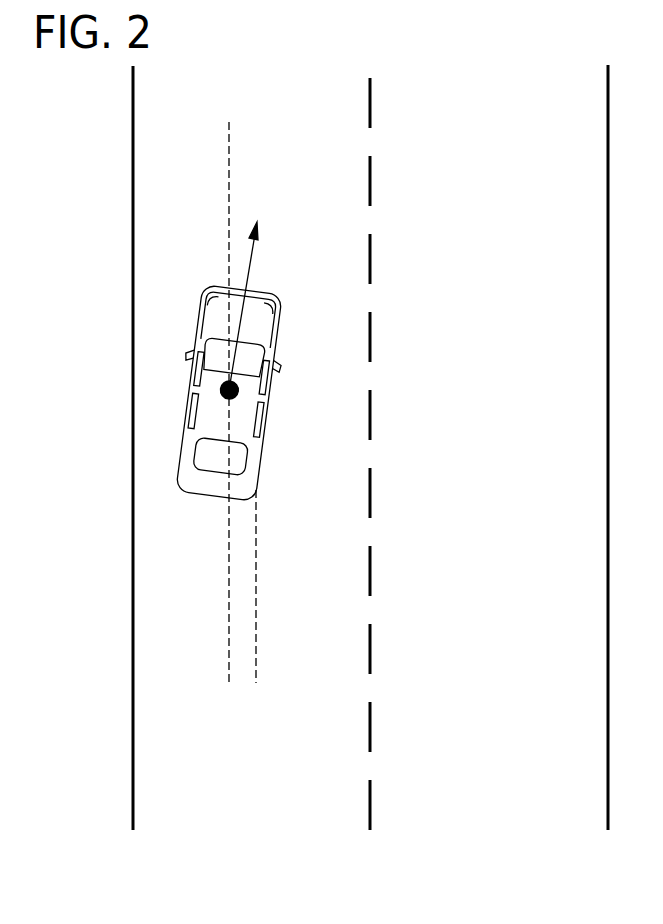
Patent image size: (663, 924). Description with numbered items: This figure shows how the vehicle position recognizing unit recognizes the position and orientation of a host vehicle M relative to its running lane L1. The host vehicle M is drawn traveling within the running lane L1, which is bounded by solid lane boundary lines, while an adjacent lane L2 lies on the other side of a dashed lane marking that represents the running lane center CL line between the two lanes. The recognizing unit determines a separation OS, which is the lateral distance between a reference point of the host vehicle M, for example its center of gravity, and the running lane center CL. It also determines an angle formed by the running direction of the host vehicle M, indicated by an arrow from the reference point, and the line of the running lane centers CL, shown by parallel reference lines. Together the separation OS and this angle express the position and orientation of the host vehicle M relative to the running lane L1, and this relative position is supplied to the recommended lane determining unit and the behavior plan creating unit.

The host vehicle M is at (187, 408).
The running lane center CL is at (255, 568).
The separation OS is at (281, 673).
The running lane L1 is at (248, 797).
The lane 2 L2 is at (492, 797).